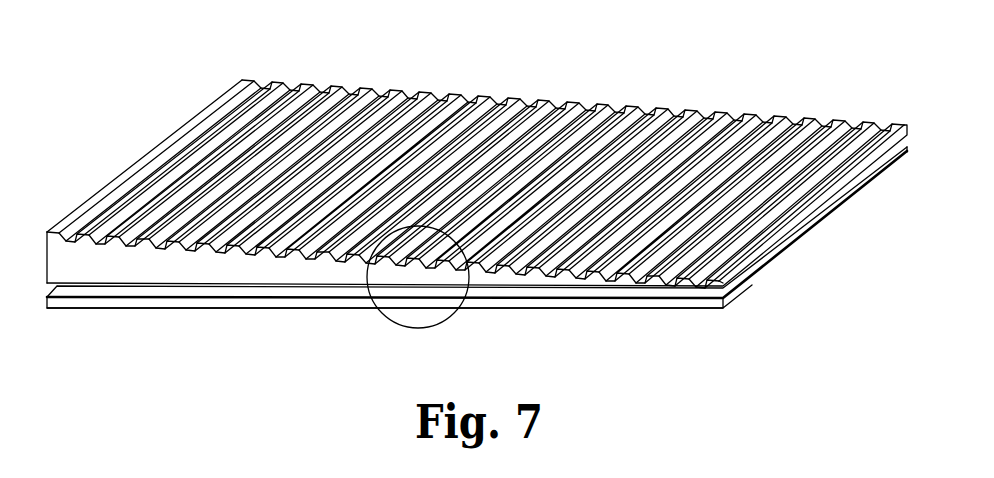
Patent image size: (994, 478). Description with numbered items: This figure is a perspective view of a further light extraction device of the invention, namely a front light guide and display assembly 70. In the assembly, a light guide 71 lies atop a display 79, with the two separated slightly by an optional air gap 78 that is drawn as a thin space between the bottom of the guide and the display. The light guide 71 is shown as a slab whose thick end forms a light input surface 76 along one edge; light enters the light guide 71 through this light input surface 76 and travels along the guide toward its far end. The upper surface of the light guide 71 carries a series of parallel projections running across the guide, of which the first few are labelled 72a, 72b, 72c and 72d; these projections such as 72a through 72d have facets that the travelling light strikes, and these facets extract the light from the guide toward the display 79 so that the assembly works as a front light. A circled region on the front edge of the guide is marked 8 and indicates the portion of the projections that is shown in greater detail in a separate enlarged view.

The front light guide and display assembly 70 is at (589, 66).
The light guide 71 is at (457, 150).
The projection 72a is at (247, 76).
The projection 72b is at (281, 73).
The projection 72c is at (308, 78).
The projection 72d is at (340, 80).
The light input surface 76 is at (46, 238).
The air gap 78 is at (52, 288).
The display 79 is at (313, 306).
The detail view circle for FIG. 8 is at (447, 319).